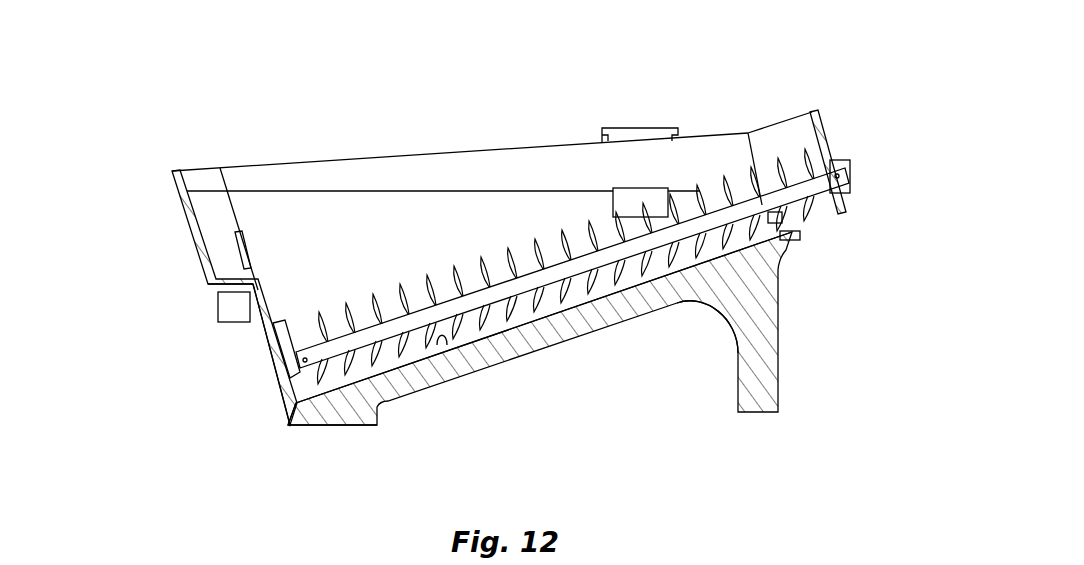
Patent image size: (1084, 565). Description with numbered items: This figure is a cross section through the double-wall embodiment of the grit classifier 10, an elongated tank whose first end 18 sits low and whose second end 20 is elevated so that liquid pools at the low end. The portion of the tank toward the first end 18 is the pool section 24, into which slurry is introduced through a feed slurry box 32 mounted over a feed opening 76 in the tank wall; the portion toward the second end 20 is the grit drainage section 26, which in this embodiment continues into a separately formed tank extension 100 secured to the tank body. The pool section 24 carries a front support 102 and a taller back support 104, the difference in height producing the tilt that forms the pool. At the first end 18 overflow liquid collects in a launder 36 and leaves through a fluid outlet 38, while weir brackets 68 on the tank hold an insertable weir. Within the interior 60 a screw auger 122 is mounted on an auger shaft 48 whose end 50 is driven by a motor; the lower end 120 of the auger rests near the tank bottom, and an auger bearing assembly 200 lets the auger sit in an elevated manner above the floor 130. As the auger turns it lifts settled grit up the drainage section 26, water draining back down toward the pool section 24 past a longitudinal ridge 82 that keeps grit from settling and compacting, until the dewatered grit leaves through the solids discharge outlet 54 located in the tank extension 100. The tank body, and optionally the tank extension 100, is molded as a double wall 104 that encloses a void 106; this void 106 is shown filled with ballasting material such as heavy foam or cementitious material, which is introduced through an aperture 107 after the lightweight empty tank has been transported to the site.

The grit classifier 10 is at (513, 86).
The first end 18 is at (262, 322).
The second end 20 is at (815, 116).
The pool section 24 is at (362, 226).
The grit drainage section 26 is at (715, 148).
The feed slurry box 32 is at (641, 128).
The launder 36 is at (203, 208).
The fluid outlet 38 is at (225, 313).
The auger shaft 48 is at (498, 290).
The end of the auger shaft 50 is at (847, 162).
The solids discharge outlet 54 is at (833, 219).
The interior 60 is at (399, 246).
The weir bracket 68 is at (243, 238).
The feed opening 76 is at (614, 204).
The ridge 82 is at (640, 290).
The tank extension 100 is at (788, 112).
The front support 102 is at (289, 416).
The double wall 104 is at (200, 261).
The void 106 is at (207, 285).
The aperture 107 is at (799, 243).
The lower end of the screw auger 120 is at (300, 356).
The screw auger 122 is at (487, 278).
The floor 130 is at (442, 344).
The auger bearing assembly 200 is at (315, 423).